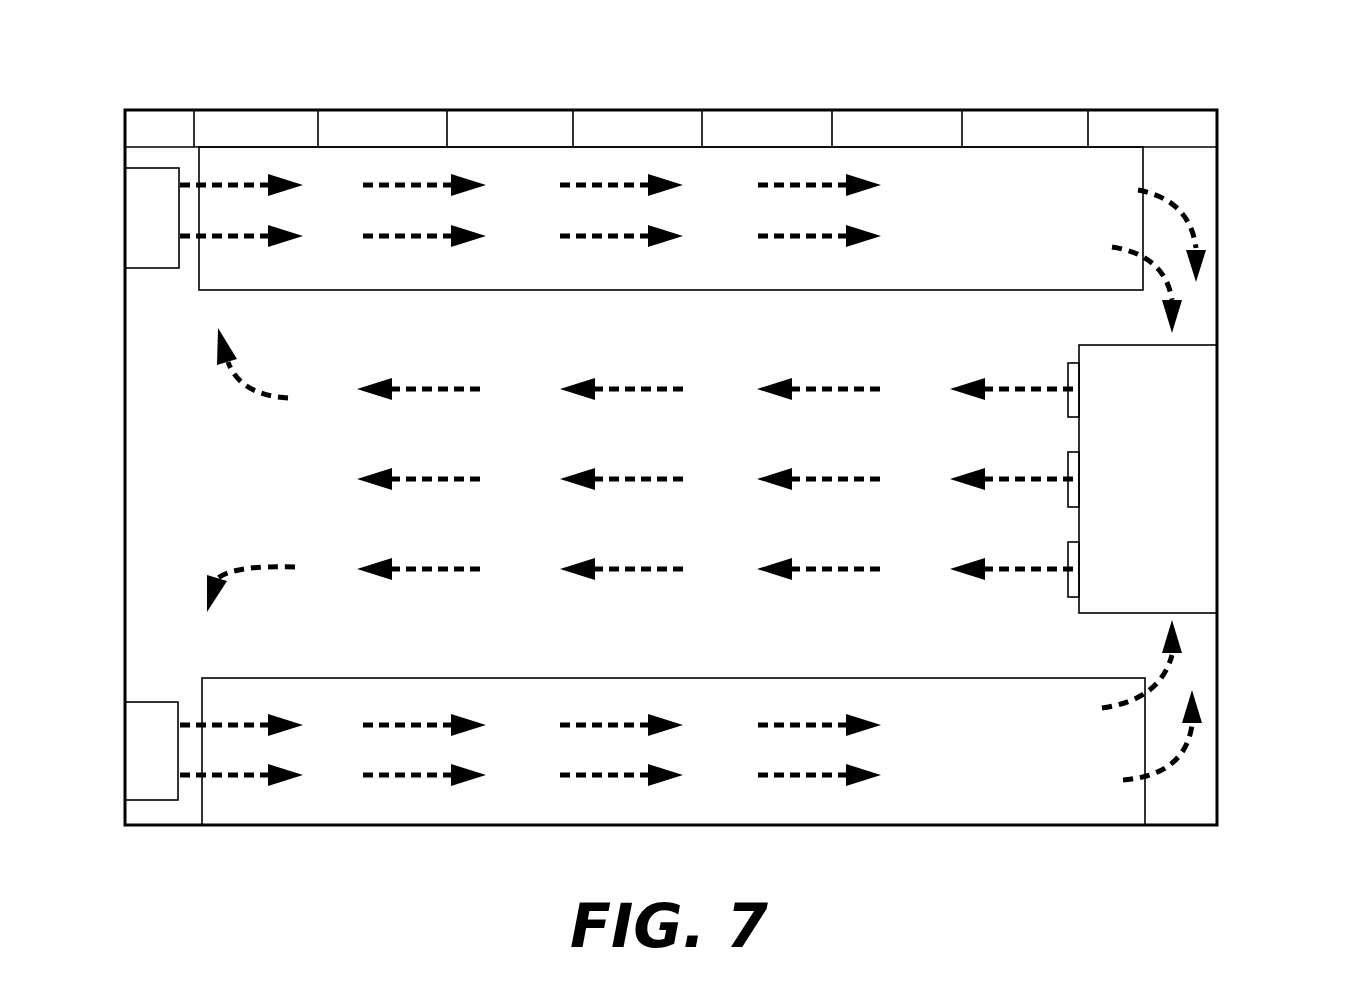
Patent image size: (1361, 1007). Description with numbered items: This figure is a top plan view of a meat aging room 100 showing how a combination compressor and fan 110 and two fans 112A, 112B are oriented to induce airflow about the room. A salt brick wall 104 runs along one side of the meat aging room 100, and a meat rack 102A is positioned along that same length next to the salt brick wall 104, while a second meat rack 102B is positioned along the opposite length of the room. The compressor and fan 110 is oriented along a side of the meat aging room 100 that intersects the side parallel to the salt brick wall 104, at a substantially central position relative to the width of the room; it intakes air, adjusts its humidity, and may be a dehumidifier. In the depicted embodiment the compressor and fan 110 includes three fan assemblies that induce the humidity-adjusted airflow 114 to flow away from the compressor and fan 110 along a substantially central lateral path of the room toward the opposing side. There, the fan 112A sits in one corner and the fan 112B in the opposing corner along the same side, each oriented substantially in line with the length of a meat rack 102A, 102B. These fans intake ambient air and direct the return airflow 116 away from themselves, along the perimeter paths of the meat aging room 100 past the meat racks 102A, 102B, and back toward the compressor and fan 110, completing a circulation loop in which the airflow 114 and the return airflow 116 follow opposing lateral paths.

The meat aging room 100 is at (1284, 128).
The meat rack 102A is at (671, 218).
The meat rack 102B is at (673, 751).
The salt brick wall 104 is at (671, 128).
The compressor and fan 110 is at (1142, 479).
The fan 112A is at (153, 168).
The fan 112B is at (152, 702).
The airflow 114 is at (1050, 570).
The return airflow 116 is at (252, 185).